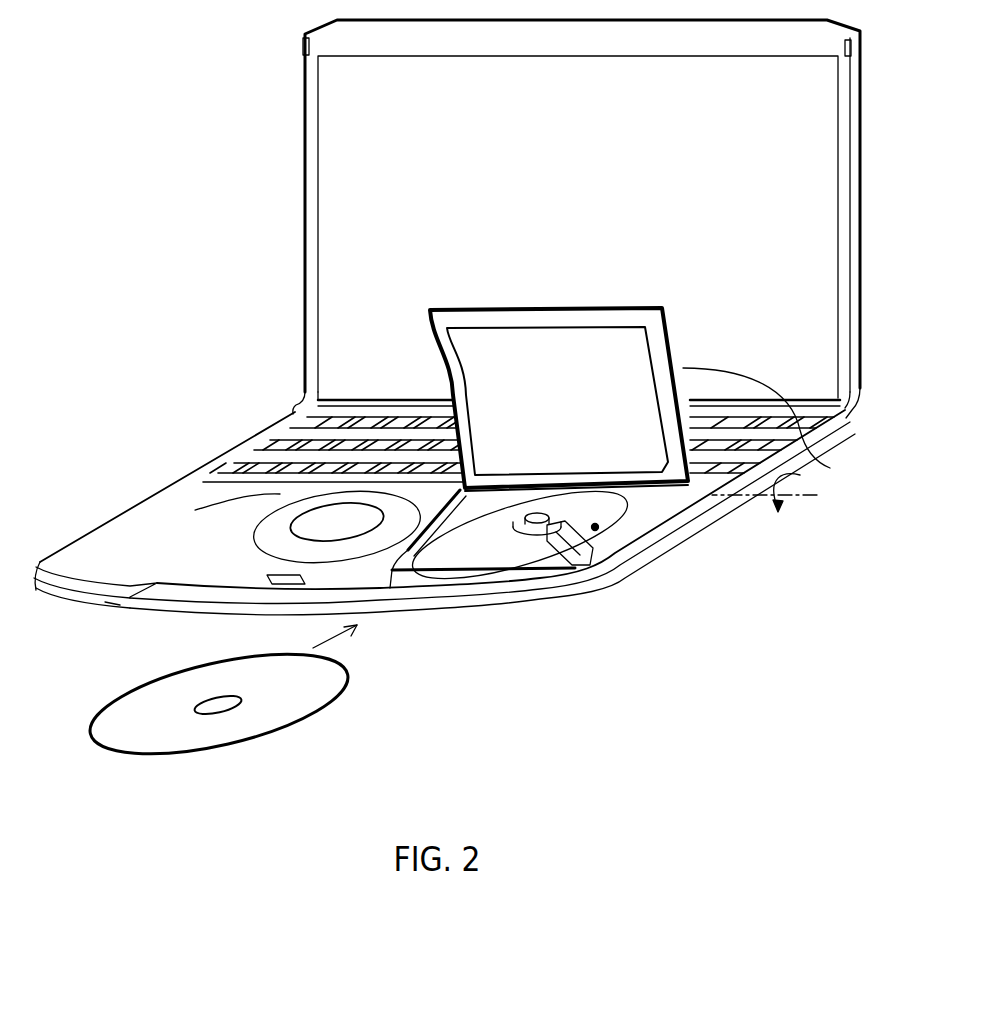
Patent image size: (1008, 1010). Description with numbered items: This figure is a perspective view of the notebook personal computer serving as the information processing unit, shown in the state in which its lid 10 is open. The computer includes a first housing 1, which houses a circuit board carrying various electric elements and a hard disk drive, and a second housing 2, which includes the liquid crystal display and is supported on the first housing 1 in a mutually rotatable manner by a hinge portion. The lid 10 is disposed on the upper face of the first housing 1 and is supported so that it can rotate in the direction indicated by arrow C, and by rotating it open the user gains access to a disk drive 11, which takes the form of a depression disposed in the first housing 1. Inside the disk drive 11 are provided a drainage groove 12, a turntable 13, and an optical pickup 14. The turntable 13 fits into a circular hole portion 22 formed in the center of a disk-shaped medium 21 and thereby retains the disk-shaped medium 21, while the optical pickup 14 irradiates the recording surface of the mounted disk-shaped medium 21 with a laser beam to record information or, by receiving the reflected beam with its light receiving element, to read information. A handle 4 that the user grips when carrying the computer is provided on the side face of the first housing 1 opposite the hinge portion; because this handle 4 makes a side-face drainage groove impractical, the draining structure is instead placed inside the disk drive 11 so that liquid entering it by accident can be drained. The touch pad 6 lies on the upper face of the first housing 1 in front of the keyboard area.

The first housing 1 is at (700, 524).
The second housing 2 is at (300, 208).
The handle 4 is at (197, 613).
The pointing device (touch pad) 6 is at (316, 528).
The lid 10 is at (818, 463).
The disk drive 11 is at (598, 527).
The drainage groove 12 is at (333, 568).
The turntable 13 is at (520, 527).
The optical pickup 14 is at (556, 545).
The disk-shaped medium 21 is at (195, 735).
The circular hole portion 22 is at (222, 702).
The direction indicated by arrow C is at (817, 495).